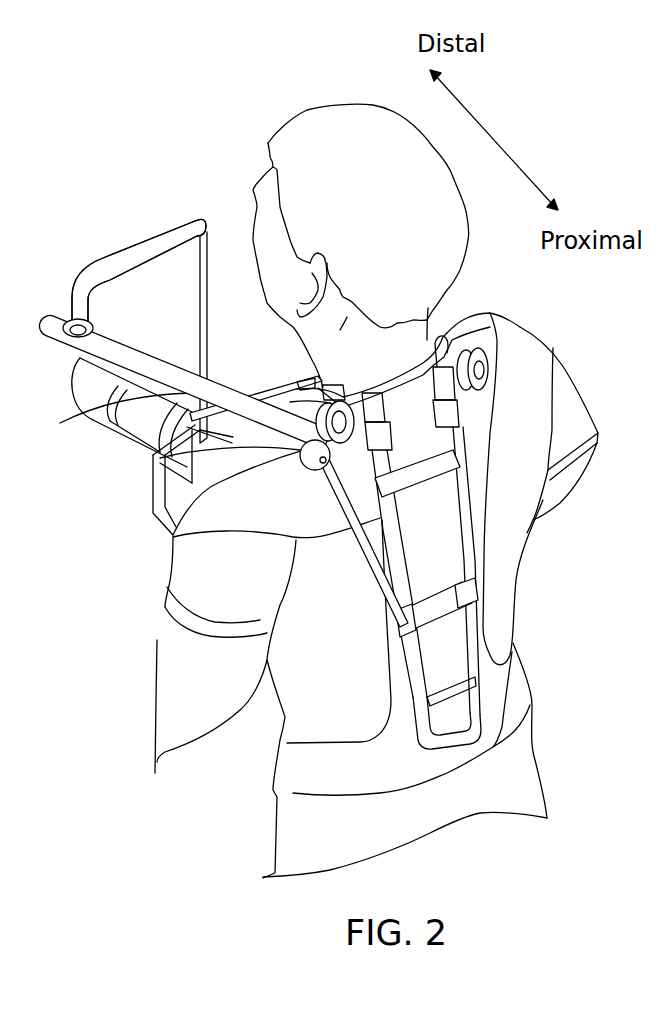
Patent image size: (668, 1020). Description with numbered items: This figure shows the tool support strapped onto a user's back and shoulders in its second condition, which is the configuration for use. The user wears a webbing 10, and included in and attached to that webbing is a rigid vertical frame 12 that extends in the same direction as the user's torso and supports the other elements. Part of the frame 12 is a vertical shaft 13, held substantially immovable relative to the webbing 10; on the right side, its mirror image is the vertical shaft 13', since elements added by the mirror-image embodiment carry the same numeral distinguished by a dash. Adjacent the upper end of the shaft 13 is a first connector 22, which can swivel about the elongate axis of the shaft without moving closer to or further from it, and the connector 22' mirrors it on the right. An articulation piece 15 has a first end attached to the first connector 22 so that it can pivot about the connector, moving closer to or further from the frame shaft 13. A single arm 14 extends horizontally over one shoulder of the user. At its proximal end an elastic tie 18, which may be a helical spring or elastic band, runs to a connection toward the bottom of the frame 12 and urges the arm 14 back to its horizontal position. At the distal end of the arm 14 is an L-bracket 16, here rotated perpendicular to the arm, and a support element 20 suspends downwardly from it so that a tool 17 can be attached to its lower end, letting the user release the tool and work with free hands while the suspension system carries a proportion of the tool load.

The webbing 10 is at (517, 697).
The rigid vertical frame 12 is at (480, 627).
The vertical shaft 13 is at (374, 541).
The right-side vertical shaft 13' is at (508, 525).
The arm 14 is at (80, 343).
The articulation piece 15 is at (263, 400).
The L-bracket 16 is at (173, 240).
The tool 17 is at (80, 397).
The elastic tie 18 is at (172, 535).
The support element 20 is at (200, 302).
The first connector 22 is at (218, 453).
The right-side first connector 22' is at (532, 360).